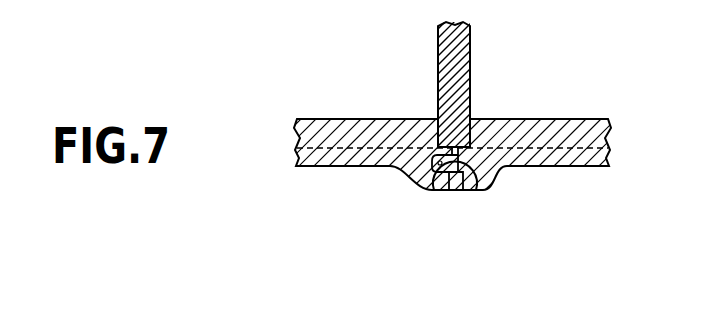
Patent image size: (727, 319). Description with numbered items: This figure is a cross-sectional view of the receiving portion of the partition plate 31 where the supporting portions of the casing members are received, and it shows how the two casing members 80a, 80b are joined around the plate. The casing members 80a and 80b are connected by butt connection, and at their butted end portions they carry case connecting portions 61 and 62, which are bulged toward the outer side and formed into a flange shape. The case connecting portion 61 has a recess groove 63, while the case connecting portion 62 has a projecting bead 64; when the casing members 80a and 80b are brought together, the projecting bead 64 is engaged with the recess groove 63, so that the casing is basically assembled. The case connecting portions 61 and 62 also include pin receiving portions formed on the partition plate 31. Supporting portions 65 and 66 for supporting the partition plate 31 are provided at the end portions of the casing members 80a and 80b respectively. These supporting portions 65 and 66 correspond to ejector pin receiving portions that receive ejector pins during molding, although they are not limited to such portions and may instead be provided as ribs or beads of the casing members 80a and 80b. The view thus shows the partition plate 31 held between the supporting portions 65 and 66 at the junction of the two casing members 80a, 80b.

The partition plate 31 is at (466, 45).
The case connecting portion 61 is at (410, 193).
The case connecting portion 62 is at (488, 192).
The recess groove 63 is at (434, 191).
The projecting bead 64 is at (475, 191).
The supporting portion 65 is at (347, 118).
The supporting portion 66 is at (576, 118).
The casing member 80a is at (311, 167).
The casing member 80b is at (600, 167).